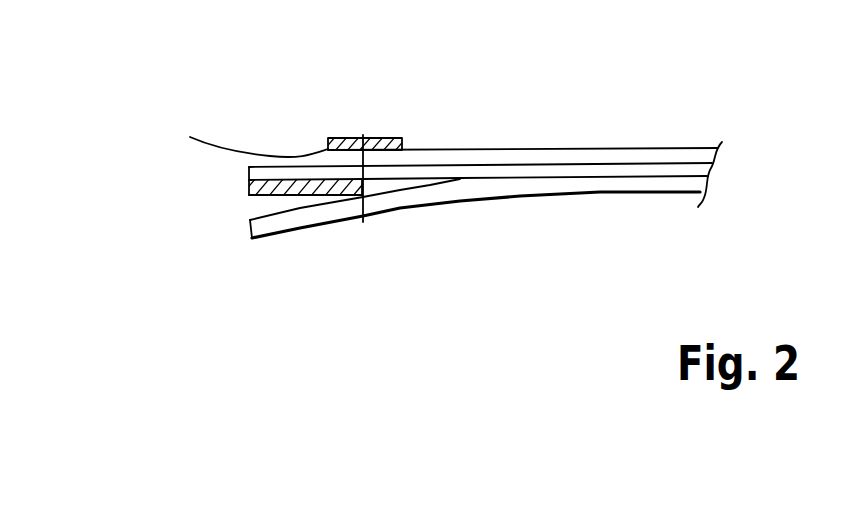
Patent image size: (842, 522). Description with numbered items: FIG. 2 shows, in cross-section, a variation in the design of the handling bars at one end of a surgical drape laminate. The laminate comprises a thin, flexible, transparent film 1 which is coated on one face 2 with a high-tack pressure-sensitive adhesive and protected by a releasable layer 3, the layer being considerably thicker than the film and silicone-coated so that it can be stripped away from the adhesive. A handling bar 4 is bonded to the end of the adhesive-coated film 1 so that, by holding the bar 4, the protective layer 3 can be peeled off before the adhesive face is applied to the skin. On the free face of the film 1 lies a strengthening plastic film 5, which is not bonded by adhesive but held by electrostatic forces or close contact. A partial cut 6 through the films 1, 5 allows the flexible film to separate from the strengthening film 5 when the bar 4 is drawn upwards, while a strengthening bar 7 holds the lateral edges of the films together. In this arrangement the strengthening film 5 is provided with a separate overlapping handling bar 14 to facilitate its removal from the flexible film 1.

The thin, flexible, transparent film 1 is at (247, 170).
The adhesive-coated face 2 is at (551, 178).
The releasable layer 3 is at (622, 185).
The handling bar 4 is at (250, 190).
The strengthening plastic film 5 is at (552, 153).
The partial cut 6 is at (366, 218).
The strengthening bar 7 is at (367, 136).
The separate overlapping handling bar 14 is at (247, 131).